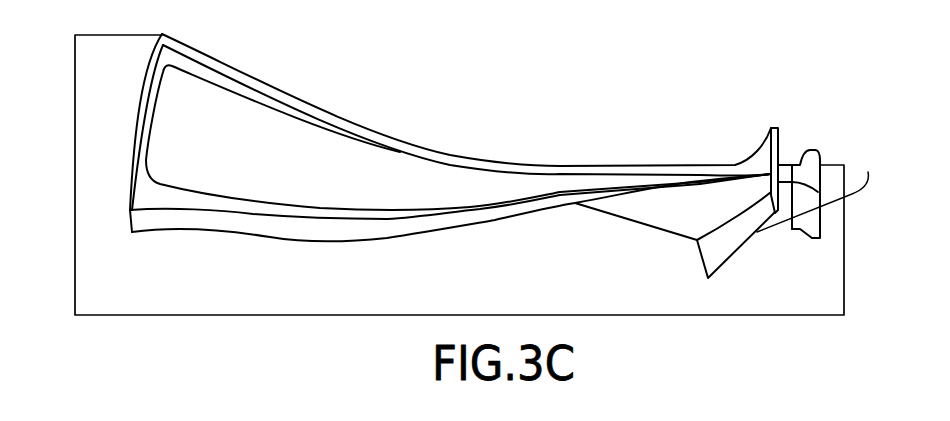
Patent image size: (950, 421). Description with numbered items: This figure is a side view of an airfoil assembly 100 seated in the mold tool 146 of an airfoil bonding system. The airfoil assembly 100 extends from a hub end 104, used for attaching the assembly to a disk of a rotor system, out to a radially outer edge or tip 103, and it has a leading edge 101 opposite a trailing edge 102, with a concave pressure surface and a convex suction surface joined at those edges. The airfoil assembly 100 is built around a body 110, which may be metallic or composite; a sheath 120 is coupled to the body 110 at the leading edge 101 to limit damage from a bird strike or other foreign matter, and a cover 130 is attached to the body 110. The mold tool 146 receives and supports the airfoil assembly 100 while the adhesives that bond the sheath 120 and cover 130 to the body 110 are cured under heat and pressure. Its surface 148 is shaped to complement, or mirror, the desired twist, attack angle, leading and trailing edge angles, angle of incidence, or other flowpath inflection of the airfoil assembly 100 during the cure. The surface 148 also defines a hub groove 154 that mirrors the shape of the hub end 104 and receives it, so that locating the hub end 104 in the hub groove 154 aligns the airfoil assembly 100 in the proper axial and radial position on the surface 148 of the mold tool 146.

The airfoil assembly 100 is at (399, 154).
The leading edge 101 is at (712, 177).
The trailing edge 102 is at (630, 222).
The tip 103 is at (129, 184).
The hub end 104 is at (771, 127).
The body 110 is at (232, 92).
The sheath 120 is at (383, 232).
The cover 130 is at (277, 169).
The mold tool 146 is at (196, 308).
The surface 148 is at (121, 92).
The hub groove 154 is at (823, 191).